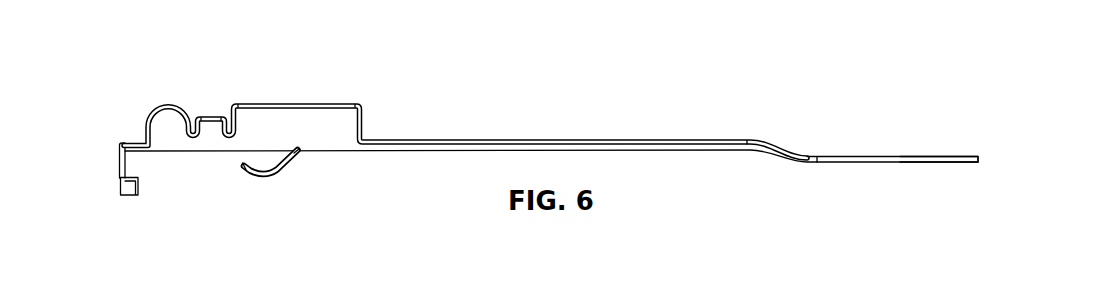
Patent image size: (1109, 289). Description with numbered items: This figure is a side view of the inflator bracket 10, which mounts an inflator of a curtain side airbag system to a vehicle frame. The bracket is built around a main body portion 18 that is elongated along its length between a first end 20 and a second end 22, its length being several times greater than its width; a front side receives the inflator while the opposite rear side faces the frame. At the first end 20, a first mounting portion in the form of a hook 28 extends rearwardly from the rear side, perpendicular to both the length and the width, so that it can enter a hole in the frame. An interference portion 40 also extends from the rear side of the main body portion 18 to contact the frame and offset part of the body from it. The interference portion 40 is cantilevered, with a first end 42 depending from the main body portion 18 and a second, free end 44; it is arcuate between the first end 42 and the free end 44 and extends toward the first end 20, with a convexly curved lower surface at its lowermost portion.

The inflator bracket 10 is at (868, 50).
The main body portion 18 is at (544, 130).
The first end 20 is at (133, 141).
The second end 22 is at (970, 164).
The hook 28 is at (118, 167).
The interference portion 40 is at (275, 186).
The first end of interference portion 42 is at (297, 152).
The second, free end 44 is at (243, 166).